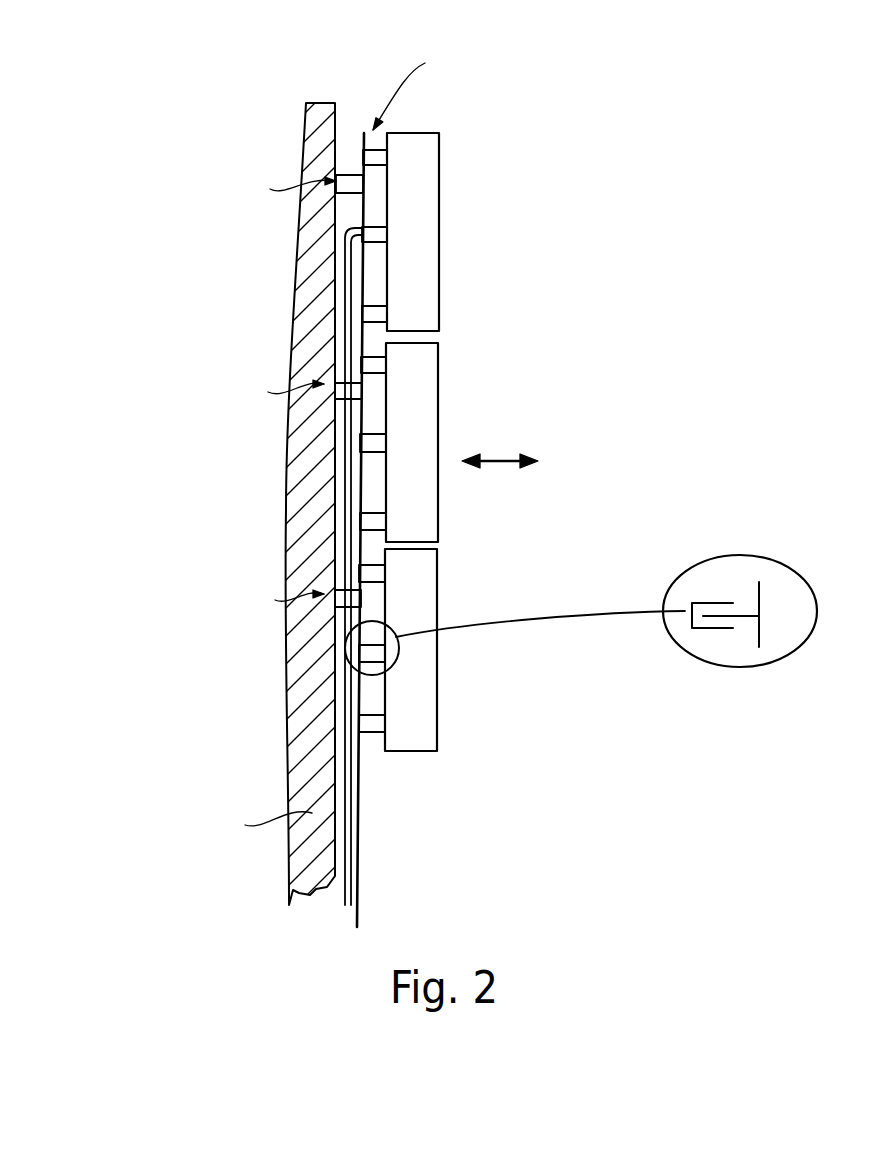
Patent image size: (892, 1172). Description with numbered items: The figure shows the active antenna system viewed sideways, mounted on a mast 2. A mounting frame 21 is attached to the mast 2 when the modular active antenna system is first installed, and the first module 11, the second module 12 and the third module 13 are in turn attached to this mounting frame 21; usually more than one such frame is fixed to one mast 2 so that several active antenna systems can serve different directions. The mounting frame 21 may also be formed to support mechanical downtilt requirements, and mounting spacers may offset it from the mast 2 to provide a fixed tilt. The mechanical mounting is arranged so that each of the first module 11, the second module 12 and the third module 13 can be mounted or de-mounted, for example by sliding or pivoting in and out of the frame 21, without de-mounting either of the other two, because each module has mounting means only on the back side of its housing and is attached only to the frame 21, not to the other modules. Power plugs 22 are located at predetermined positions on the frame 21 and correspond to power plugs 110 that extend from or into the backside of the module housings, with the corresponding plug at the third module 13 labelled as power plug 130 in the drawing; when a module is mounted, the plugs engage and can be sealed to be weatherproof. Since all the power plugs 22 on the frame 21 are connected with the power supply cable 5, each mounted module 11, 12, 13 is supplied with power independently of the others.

The mast 2 is at (318, 112).
The power supply cable 5 is at (344, 903).
The mounting frame 21 is at (363, 132).
The power plug 22 is at (368, 222).
The first module 11 is at (423, 567).
The second module 12 is at (423, 372).
The third module 13 is at (425, 161).
The power plug 110 is at (738, 607).
The upper end of antenna module M3 130 is at (438, 132).